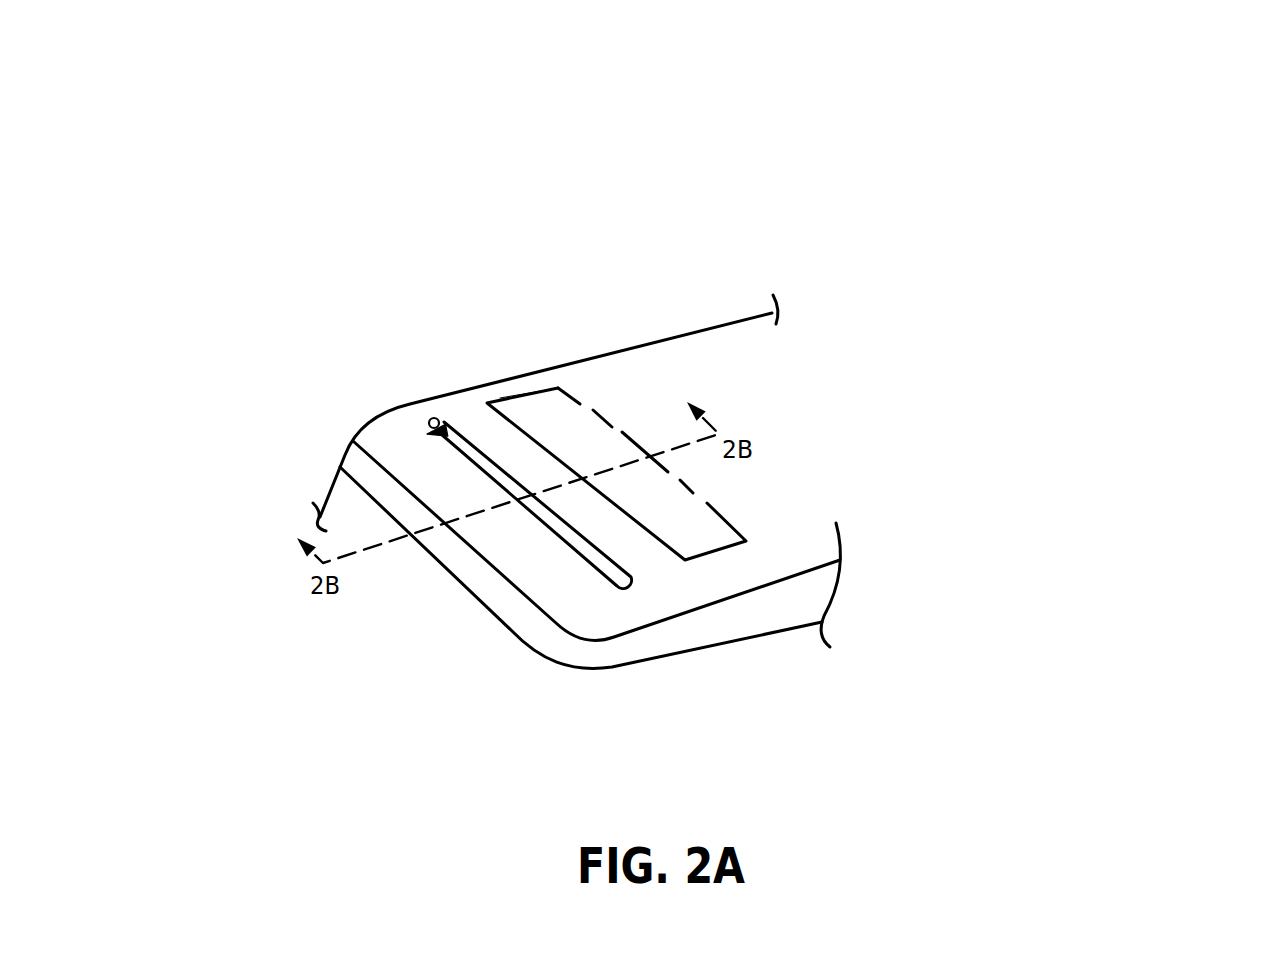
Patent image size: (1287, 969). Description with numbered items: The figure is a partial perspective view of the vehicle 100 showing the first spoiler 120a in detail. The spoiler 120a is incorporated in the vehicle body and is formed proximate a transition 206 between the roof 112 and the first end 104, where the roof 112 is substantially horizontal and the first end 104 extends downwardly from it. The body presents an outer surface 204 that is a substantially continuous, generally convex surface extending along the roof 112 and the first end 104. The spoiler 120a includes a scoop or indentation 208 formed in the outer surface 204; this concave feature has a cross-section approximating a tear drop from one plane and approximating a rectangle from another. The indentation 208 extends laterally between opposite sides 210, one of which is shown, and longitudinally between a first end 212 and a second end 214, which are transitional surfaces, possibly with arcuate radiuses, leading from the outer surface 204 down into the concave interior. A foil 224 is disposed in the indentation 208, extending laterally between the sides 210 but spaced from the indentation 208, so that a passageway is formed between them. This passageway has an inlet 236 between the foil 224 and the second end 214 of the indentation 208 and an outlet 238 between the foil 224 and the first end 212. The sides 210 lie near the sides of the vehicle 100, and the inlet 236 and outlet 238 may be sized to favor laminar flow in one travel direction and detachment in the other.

The vehicle 100 is at (1140, 188).
The first end 104 is at (374, 601).
The roof 112 is at (858, 450).
The first spoiler 120a is at (795, 688).
The outer surface 204 is at (818, 427).
The transition 206 is at (527, 552).
The indentation 208 is at (697, 522).
The sides 210 is at (500, 398).
The first end 212 is at (582, 556).
The second end 214 is at (610, 422).
The foil 224 is at (559, 472).
The inlet 236 is at (585, 410).
The outlet 238 is at (429, 419).